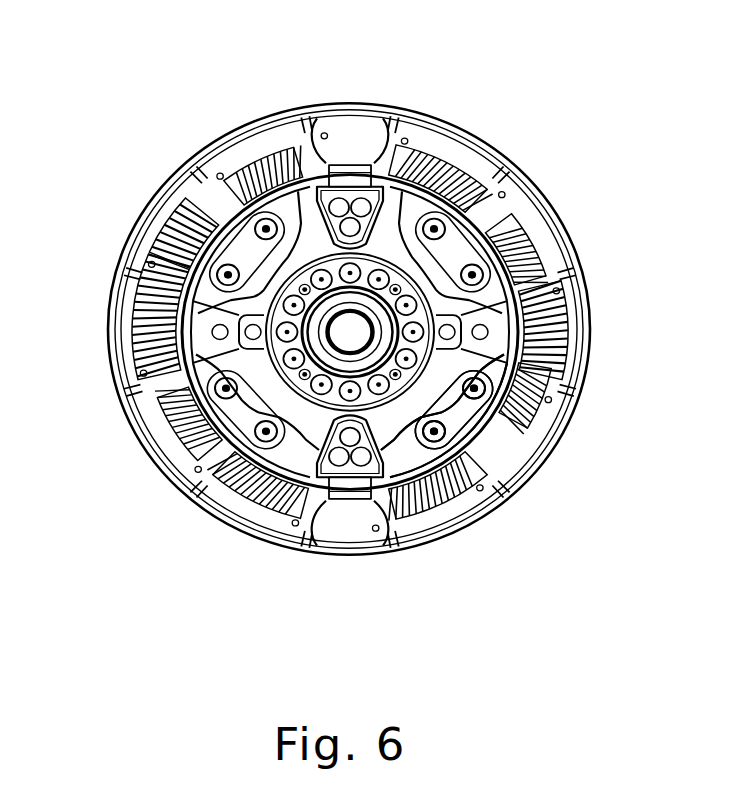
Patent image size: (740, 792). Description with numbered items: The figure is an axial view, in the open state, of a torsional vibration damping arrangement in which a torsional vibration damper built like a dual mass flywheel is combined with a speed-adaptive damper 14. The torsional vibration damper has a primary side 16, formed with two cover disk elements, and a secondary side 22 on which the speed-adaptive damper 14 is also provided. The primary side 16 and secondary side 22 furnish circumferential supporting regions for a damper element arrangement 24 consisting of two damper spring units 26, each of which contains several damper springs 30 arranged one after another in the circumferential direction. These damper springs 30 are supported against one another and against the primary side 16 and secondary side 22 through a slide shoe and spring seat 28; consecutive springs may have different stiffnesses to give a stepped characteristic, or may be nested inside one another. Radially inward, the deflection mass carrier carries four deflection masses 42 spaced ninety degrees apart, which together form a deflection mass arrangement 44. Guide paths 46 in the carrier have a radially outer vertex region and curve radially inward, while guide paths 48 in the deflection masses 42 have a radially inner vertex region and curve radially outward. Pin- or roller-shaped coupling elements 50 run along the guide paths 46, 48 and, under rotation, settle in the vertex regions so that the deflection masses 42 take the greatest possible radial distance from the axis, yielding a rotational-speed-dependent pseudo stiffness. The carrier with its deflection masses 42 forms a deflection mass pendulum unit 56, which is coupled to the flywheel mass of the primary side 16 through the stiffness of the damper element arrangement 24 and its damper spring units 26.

The speed-adaptive damper 14 is at (450, 165).
The primary side 16 is at (518, 146).
The secondary side 22 is at (349, 152).
The damper element arrangement 24 is at (570, 206).
The damper spring unit 26 is at (588, 313).
The slide shoe and spring seat 28 is at (562, 393).
The damper spring 30 is at (558, 440).
The deflection mass 42 is at (138, 364).
The deflection mass arrangement 44 is at (388, 468).
The guide path 46 is at (167, 187).
The guide path 48 is at (277, 210).
The coupling element 50 is at (225, 165).
The deflection mass pendulum unit 56 is at (308, 468).